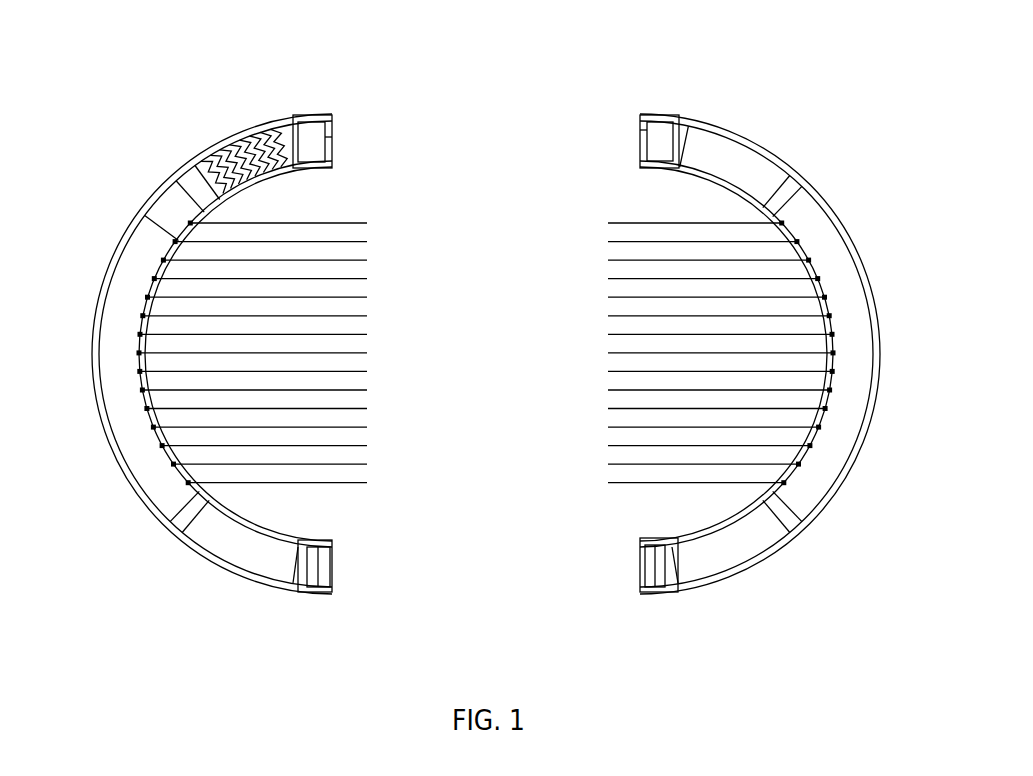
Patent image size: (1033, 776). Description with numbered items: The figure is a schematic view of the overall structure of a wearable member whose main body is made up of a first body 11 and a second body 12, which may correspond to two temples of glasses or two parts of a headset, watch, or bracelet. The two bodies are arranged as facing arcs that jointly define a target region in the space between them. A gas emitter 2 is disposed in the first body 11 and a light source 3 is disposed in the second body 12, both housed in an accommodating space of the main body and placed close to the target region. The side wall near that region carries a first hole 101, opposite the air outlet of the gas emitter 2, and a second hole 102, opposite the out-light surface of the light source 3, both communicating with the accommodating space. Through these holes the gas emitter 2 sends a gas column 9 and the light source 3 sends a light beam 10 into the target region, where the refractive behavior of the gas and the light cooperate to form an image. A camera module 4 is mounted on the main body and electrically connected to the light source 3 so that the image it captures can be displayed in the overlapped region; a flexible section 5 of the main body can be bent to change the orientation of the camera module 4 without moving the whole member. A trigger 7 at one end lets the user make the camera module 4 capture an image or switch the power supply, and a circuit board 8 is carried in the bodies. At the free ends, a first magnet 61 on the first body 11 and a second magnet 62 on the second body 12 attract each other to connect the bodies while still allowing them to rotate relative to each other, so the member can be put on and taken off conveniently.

The gas emitter 2 is at (123, 332).
The light source 3 is at (850, 320).
The camera module 4 is at (310, 140).
The flexible section 5 is at (240, 146).
The trigger 7 is at (657, 135).
The circuit board 8 is at (175, 212).
The gas column 9 is at (335, 428).
The light beam 10 is at (650, 447).
The first body 11 is at (203, 558).
The second body 12 is at (765, 555).
The first magnet 61 is at (322, 590).
The second magnet 62 is at (645, 573).
The first hole 101 is at (148, 413).
The second hole 102 is at (822, 410).